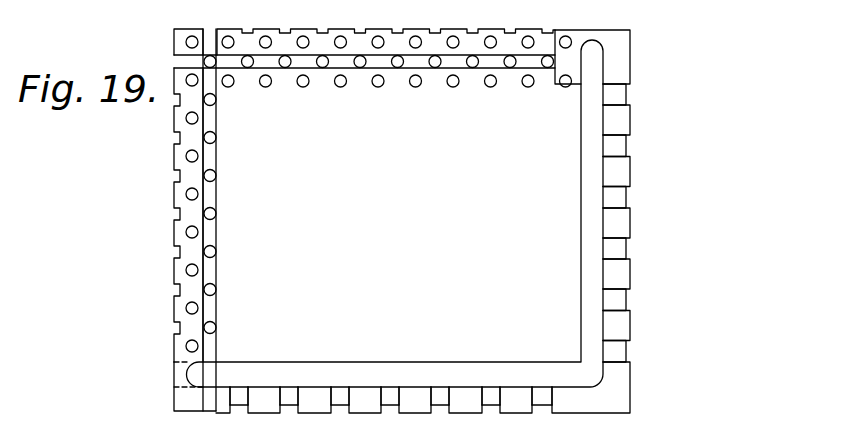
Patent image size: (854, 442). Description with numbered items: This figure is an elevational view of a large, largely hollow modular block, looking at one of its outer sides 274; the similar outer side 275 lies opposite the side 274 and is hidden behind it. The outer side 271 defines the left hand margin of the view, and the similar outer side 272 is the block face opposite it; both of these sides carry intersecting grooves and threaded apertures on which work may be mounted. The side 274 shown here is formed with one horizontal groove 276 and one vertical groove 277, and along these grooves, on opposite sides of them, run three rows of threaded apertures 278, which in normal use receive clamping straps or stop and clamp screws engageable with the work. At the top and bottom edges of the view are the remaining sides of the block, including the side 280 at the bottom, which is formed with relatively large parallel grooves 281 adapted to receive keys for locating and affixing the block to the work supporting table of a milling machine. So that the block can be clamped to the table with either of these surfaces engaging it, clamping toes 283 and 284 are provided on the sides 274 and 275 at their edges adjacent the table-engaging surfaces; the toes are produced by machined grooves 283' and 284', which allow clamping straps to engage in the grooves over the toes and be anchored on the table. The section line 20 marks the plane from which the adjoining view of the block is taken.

The outer side 271 is at (173, 193).
The outer side 272 is at (221, 30).
The outer side 274 is at (148, 345).
The outer side 275 is at (373, 27).
The horizontal groove 276 is at (575, 70).
The vertical groove 277 is at (212, 155).
The threaded apertures 278 is at (222, 197).
The side 280 is at (607, 428).
The parallel grooves 281 is at (193, 438).
The clamping toe 283 is at (374, 411).
The groove 283' is at (399, 414).
The clamping toe 284 is at (643, 223).
The groove 284' is at (648, 223).
The line 20— 20 is at (646, 31).